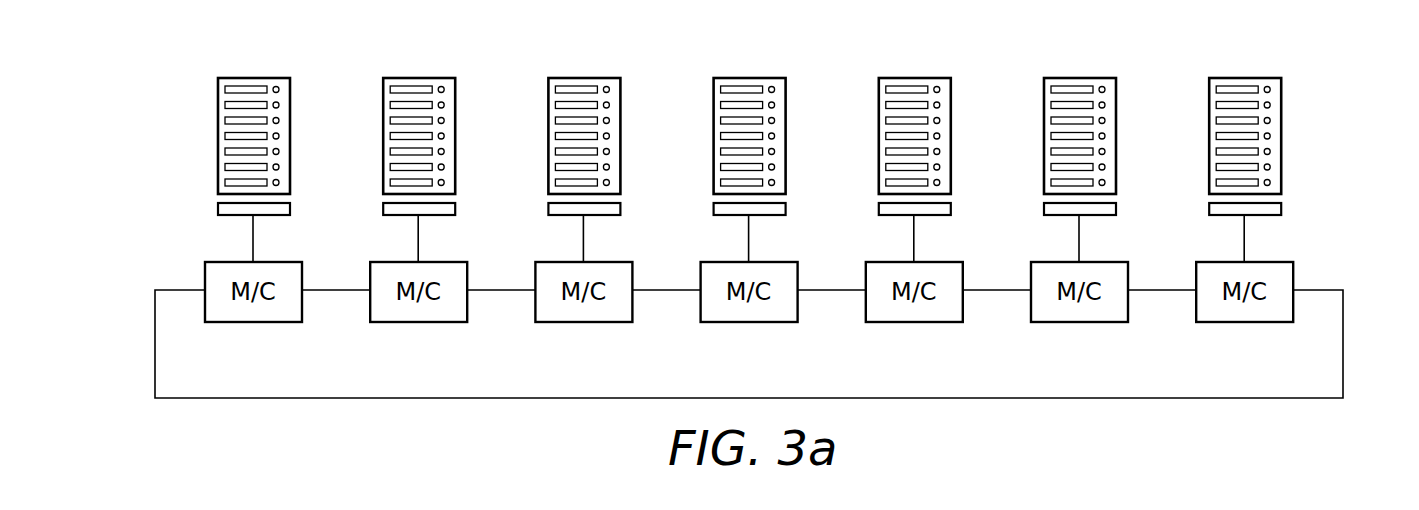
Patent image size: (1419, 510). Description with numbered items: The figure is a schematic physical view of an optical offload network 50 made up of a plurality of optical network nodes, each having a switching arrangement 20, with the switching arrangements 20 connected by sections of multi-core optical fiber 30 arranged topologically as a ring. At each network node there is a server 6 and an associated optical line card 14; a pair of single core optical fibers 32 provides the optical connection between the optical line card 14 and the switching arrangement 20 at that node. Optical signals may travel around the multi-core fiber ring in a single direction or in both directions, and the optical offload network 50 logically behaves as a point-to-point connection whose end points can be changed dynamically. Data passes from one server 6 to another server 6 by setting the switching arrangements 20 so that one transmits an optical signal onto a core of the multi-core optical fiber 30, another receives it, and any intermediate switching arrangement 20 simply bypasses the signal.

The optical offload network 50 is at (173, 78).
The server 6 is at (749, 108).
The optical line card 14 is at (718, 209).
The single core optical fiber 32 is at (782, 238).
The switching arrangement 20 is at (749, 324).
The multi-core optical fiber 30 is at (155, 345).